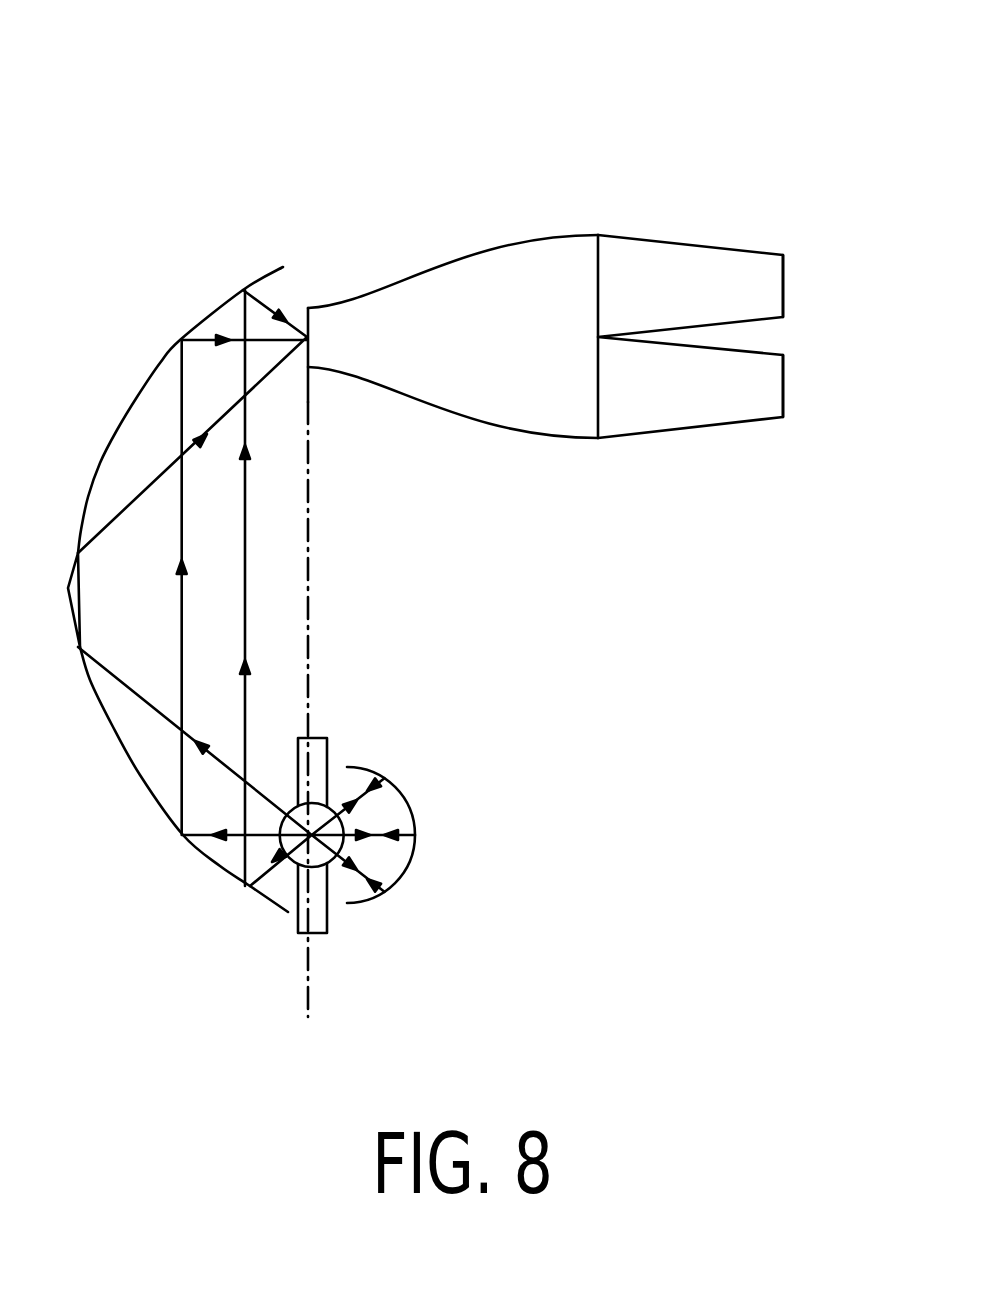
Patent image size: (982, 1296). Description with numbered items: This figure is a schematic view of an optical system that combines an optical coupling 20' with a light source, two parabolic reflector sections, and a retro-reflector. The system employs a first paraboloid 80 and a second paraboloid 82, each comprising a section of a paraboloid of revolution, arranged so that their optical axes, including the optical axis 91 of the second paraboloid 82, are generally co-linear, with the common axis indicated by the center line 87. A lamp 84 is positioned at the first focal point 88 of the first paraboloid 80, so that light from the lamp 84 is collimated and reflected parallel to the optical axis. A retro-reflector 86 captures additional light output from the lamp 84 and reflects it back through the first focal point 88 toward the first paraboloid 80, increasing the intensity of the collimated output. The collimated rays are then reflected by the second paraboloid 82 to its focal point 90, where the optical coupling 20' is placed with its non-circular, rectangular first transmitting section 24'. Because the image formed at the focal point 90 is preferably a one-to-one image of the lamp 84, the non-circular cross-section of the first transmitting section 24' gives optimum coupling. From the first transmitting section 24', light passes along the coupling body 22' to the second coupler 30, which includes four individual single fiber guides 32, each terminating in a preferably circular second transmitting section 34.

The optical coupling 20' is at (565, 271).
The waveguide 22' is at (453, 383).
The first transmitting section 24' is at (283, 416).
The second coupler 30 is at (732, 295).
The single fiber guide 32 is at (727, 290).
The second transmitting section 34 is at (785, 283).
The first paraboloid reflector 80 is at (309, 628).
The second paraboloid reflector 82 is at (158, 352).
The lamp 84 is at (320, 910).
The retro-reflector 86 is at (430, 874).
The axis 87 is at (312, 653).
The first focal point 88 is at (347, 767).
The focal point of the second paraboloid 90 is at (303, 335).
The optical axis 91 is at (307, 520).